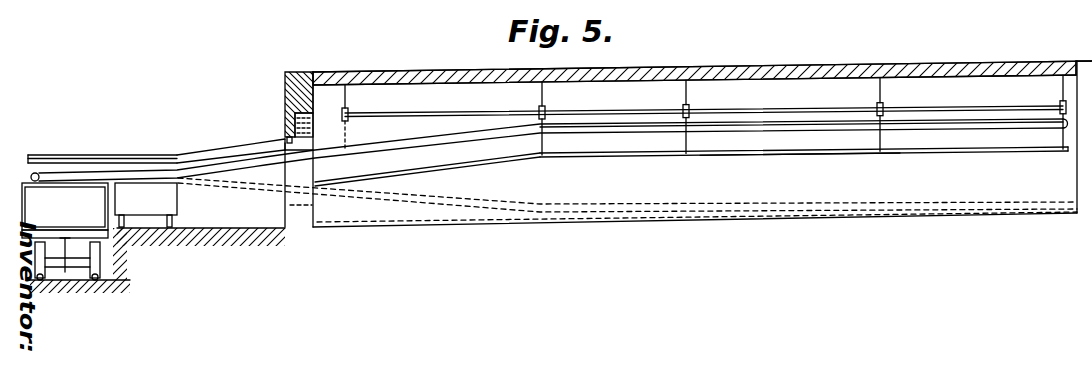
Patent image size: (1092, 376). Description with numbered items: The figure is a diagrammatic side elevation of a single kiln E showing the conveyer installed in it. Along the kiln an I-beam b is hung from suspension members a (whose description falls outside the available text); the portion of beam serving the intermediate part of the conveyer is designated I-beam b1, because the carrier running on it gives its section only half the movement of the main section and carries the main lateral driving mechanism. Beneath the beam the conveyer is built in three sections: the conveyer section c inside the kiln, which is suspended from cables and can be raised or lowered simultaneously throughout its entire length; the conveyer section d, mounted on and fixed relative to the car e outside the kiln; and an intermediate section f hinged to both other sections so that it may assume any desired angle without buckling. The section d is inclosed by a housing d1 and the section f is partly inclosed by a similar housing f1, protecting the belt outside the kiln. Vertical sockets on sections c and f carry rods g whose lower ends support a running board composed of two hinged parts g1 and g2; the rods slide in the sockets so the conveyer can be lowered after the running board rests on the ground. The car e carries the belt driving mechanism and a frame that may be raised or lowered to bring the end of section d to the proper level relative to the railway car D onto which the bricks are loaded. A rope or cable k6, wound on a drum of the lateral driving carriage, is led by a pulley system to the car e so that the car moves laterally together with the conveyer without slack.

The hanger rods a is at (348, 88).
The I-beam b is at (547, 110).
The I-beam b1 is at (350, 113).
The conveyer section c is at (773, 124).
The conveyer section d is at (140, 172).
The housing d1 is at (100, 156).
The car e is at (146, 205).
The intermediate section f is at (272, 165).
The housing f1 is at (228, 150).
The rods g is at (542, 143).
The running board part g1 is at (813, 156).
The running board part g2 is at (462, 164).
The car D is at (65, 231).
The individual kiln E is at (823, 92).
The rope or cable k6 is at (289, 89).